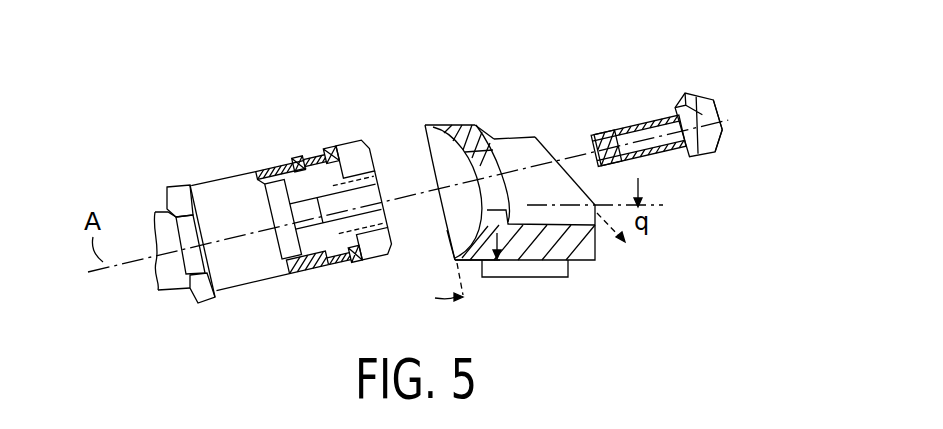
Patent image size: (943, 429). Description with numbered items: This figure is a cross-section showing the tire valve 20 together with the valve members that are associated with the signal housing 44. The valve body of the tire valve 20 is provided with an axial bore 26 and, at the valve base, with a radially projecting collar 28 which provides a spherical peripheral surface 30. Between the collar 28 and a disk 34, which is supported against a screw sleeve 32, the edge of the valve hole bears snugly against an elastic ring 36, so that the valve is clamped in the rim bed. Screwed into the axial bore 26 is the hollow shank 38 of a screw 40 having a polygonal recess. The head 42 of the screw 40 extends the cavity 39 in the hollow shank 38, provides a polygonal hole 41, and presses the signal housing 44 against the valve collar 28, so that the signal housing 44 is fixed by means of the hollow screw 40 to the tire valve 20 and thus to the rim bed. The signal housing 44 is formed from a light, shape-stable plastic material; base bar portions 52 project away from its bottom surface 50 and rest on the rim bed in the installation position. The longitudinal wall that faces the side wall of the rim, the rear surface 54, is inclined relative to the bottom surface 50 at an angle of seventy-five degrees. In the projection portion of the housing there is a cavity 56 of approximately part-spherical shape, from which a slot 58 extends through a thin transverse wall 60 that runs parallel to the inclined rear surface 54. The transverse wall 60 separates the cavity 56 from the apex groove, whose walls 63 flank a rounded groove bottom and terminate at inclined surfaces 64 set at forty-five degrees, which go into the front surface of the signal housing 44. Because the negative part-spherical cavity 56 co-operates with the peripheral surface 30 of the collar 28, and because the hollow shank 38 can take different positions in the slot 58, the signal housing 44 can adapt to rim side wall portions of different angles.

The tire valve 20 is at (252, 168).
The axial bore 26 is at (300, 227).
The collar 28 is at (347, 160).
The peripheral surface 30 is at (365, 143).
The screw sleeve 32 is at (262, 277).
The disk 34 is at (297, 162).
The elastic ring 36 is at (362, 258).
The hollow shank 38 is at (653, 153).
The cavity 39 is at (610, 143).
The screw 40 is at (658, 108).
The polygonal hole 41 is at (720, 123).
The head 42 is at (712, 152).
The signal housing 44 is at (628, 264).
The bottom surface 50 is at (596, 264).
The base bar portions 52 is at (540, 273).
The rear surface 54 is at (428, 148).
The cavity 56 is at (452, 215).
The slot 58 is at (492, 160).
The transverse wall 60 is at (453, 240).
The walls 63 is at (563, 197).
The inclined surfaces 64 is at (545, 142).